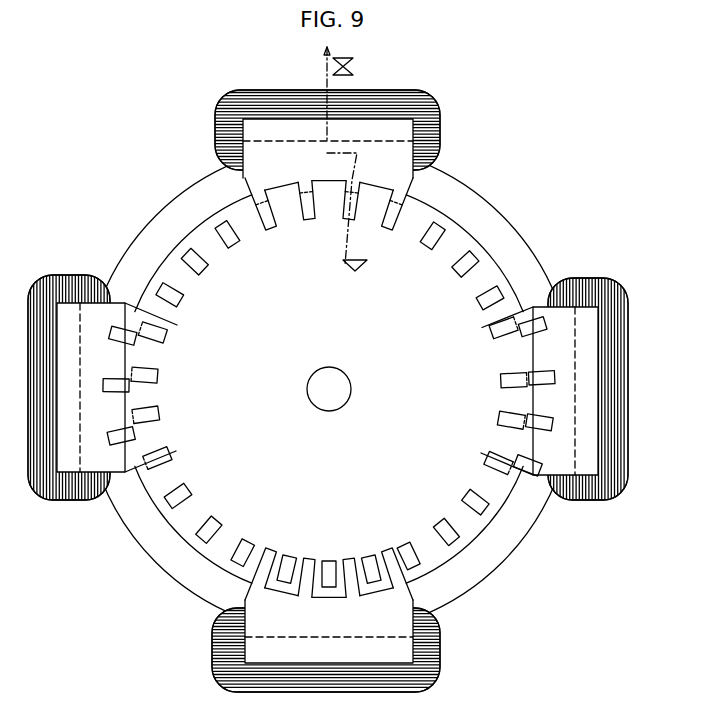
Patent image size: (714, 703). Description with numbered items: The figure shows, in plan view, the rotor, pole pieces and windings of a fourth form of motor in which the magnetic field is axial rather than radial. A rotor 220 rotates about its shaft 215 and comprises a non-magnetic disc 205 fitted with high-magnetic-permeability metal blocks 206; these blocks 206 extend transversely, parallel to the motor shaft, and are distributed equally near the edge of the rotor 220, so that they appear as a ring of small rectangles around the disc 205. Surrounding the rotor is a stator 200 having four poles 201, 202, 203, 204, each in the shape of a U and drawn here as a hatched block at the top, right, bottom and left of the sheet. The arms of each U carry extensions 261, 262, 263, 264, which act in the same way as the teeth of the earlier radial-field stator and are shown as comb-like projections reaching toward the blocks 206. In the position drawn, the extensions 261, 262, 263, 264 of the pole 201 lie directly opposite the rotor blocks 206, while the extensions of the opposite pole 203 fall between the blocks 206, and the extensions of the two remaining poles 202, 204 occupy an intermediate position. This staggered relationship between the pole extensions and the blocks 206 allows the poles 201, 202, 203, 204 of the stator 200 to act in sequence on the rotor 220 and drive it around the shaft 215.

The stator 200 is at (572, 261).
The rotor 220 is at (458, 240).
The pole 201 is at (351, 174).
The pole 202 is at (563, 318).
The pole 203 is at (398, 627).
The pole 204 is at (92, 460).
The non-magnetic disc 205 is at (276, 436).
The high-magnetic-permeability metal blocks 206 is at (186, 490).
The shaft 215 is at (352, 387).
The extension 261 is at (268, 222).
The extension 262 is at (310, 216).
The extension 263 is at (349, 222).
The extension 264 is at (388, 225).